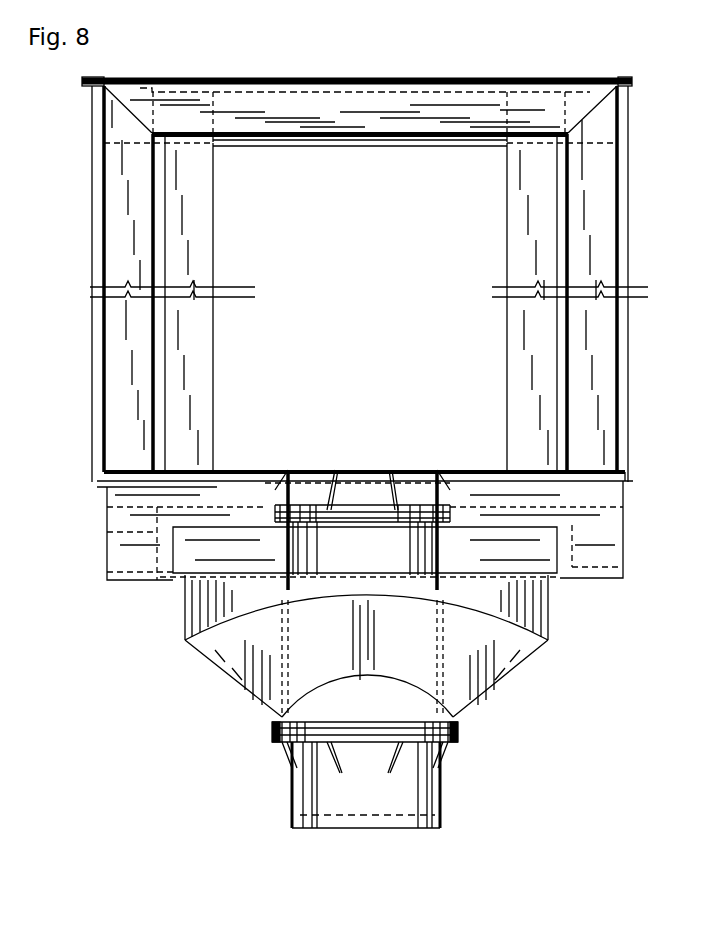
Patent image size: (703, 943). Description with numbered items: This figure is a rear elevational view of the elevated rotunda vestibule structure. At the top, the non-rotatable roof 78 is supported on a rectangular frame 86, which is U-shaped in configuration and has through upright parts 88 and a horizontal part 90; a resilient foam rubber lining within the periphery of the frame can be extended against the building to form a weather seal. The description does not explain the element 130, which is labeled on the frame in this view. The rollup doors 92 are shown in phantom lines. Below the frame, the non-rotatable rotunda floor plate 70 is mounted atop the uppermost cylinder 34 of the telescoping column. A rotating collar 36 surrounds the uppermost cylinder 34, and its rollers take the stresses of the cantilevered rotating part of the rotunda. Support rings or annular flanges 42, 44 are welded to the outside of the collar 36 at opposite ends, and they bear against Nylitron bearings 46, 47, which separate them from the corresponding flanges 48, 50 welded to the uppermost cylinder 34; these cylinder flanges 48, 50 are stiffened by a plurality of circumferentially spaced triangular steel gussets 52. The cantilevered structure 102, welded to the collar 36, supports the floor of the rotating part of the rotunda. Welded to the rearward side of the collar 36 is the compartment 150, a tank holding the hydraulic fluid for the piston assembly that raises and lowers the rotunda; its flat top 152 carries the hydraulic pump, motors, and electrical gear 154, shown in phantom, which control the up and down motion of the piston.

The non-rotatable roof 78 is at (318, 78).
The rectangular frame 86 is at (438, 105).
The inner cross member 130 is at (362, 145).
The horizontal part 90 is at (450, 120).
The rollup doors 92 is at (628, 168).
The upright parts 88 is at (608, 210).
The rotunda floor plate 70 is at (497, 468).
The support ring or annular flange 42 is at (225, 481).
The cantilevered structure 102 is at (178, 588).
The flat top 152 is at (277, 553).
The hydraulic pump, motors, and electrical gear 154 is at (440, 537).
The flange 48 is at (302, 447).
The Nylitron bearing 46 is at (262, 512).
The triangular steel gussets 52 is at (433, 470).
The compartment 150 is at (243, 670).
The rotating collar 36 is at (340, 700).
The Nylitron bearing 47 is at (462, 727).
The flange 50 is at (460, 738).
The support ring or annular flange 44 is at (460, 715).
The uppermost cylinder 34 is at (292, 797).